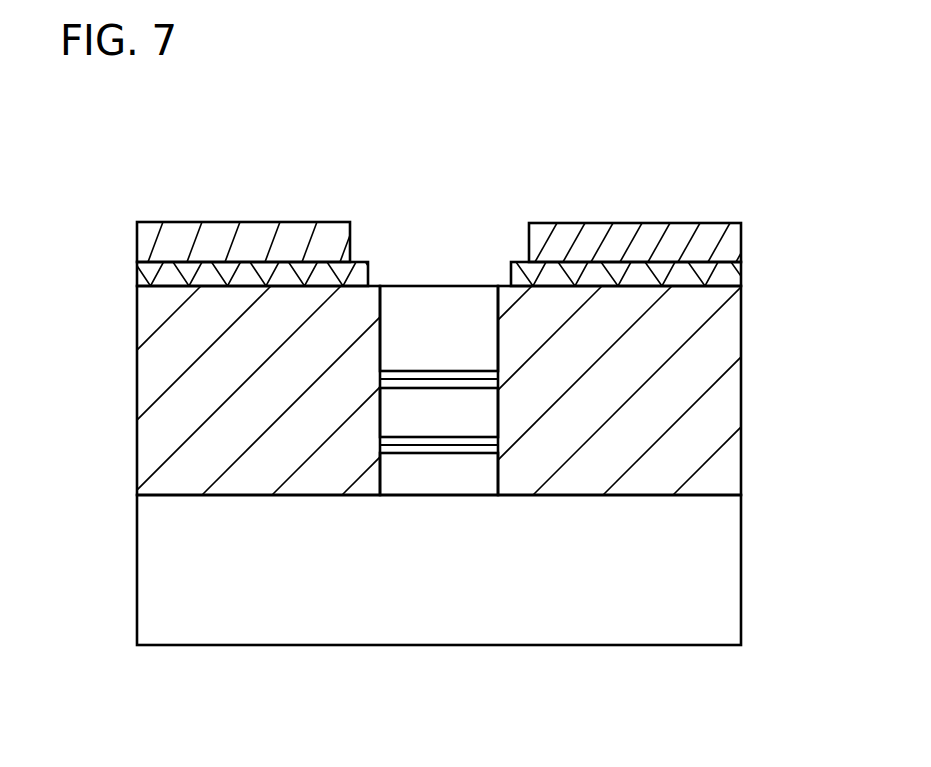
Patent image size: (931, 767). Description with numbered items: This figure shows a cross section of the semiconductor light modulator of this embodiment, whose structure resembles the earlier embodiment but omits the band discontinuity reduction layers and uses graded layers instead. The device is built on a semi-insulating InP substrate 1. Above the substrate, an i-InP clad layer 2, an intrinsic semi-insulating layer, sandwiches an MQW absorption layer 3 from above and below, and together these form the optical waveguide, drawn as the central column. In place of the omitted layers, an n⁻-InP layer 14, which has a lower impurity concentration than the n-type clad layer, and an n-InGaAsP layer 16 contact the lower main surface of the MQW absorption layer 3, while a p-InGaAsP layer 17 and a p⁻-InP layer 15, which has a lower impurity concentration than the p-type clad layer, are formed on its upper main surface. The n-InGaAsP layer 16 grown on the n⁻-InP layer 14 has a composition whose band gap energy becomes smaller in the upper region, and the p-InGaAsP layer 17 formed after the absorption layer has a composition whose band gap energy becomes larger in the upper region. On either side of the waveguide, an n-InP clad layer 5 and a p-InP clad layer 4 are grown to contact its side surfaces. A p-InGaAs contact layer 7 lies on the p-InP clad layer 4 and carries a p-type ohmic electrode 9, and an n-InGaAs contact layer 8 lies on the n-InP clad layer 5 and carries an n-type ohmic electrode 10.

The semi-insulating InP substrate 1 is at (674, 570).
The i-InP clad layer 2 is at (463, 338).
The MQW absorption layer 3 is at (463, 415).
The p-InP clad layer 4 is at (695, 363).
The n-InP clad layer 5 is at (187, 412).
The p-InGaAs contact layer 7 is at (722, 278).
The n-InGaAs contact layer 8 is at (160, 273).
The p-type ohmic electrode 9 is at (712, 246).
The n-type ohmic electrode 10 is at (168, 241).
The n⁻-InP layer 14 is at (380, 450).
The p⁻-InP layer 15 is at (380, 374).
The n-InGaAsP layer 16 is at (380, 439).
The p-InGaAsP layer 17 is at (380, 383).